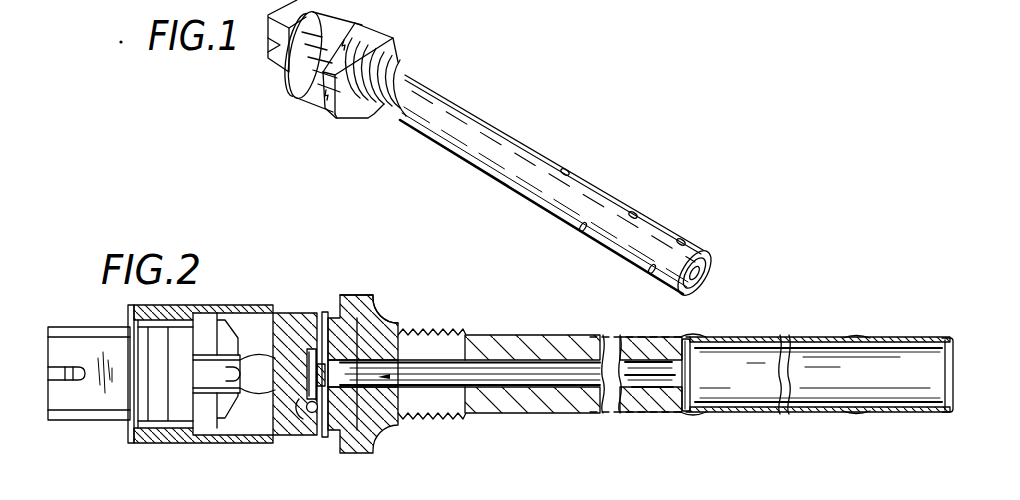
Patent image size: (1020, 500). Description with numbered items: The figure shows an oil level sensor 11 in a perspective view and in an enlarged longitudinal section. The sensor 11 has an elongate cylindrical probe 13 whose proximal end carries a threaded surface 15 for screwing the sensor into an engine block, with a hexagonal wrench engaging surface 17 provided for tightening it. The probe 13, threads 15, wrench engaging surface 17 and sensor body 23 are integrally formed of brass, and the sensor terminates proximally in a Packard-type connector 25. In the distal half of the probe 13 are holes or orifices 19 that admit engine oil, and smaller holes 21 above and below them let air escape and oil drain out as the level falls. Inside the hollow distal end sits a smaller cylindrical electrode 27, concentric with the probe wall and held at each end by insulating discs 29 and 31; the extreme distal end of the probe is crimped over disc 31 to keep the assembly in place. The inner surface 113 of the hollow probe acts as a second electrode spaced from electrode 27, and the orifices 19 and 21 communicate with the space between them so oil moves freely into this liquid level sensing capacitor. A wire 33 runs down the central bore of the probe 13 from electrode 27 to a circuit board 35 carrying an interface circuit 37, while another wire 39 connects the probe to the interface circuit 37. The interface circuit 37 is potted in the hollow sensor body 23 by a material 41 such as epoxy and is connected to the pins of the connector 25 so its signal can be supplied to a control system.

In FIG. 1, the sensor 11 is at (526, 96).
In FIG. 2, the sensor 11 is at (526, 440).
In FIG. 1, the probe 13 is at (521, 143).
In FIG. 2, the probe 13 is at (550, 414).
In FIG. 1, the threaded surface 15 is at (405, 66).
In FIG. 2, the threaded surface 15 is at (443, 328).
In FIG. 1, the hexagonal wrench engaging surface 17 is at (338, 126).
In FIG. 2, the hexagonal wrench engaging surface 17 is at (355, 445).
In FIG. 1, the holes or orifices 19 is at (628, 240).
In FIG. 2, the holes or orifices 19 is at (851, 383).
In FIG. 1, the smaller holes 21 is at (571, 169).
In FIG. 2, the smaller holes 21 is at (700, 338).
In FIG. 1, the sensor body 23 is at (346, 20).
In FIG. 2, the sensor body 23 is at (266, 304).
In FIG. 1, the connector 25 is at (268, 60).
In FIG. 2, the connector 25 is at (70, 419).
In FIG. 2, the electrode 27 is at (713, 413).
In FIG. 2, the disc 29 is at (694, 376).
In FIG. 2, the disc 31 is at (943, 378).
In FIG. 2, the wire 33 is at (532, 372).
In FIG. 2, the circuit board 35 is at (317, 305).
In FIG. 2, the interface circuit 37 is at (292, 437).
In FIG. 2, the wire 39 is at (375, 303).
In FIG. 2, the potting material 41 is at (277, 413).
In FIG. 2, the inner surface 113 is at (783, 338).